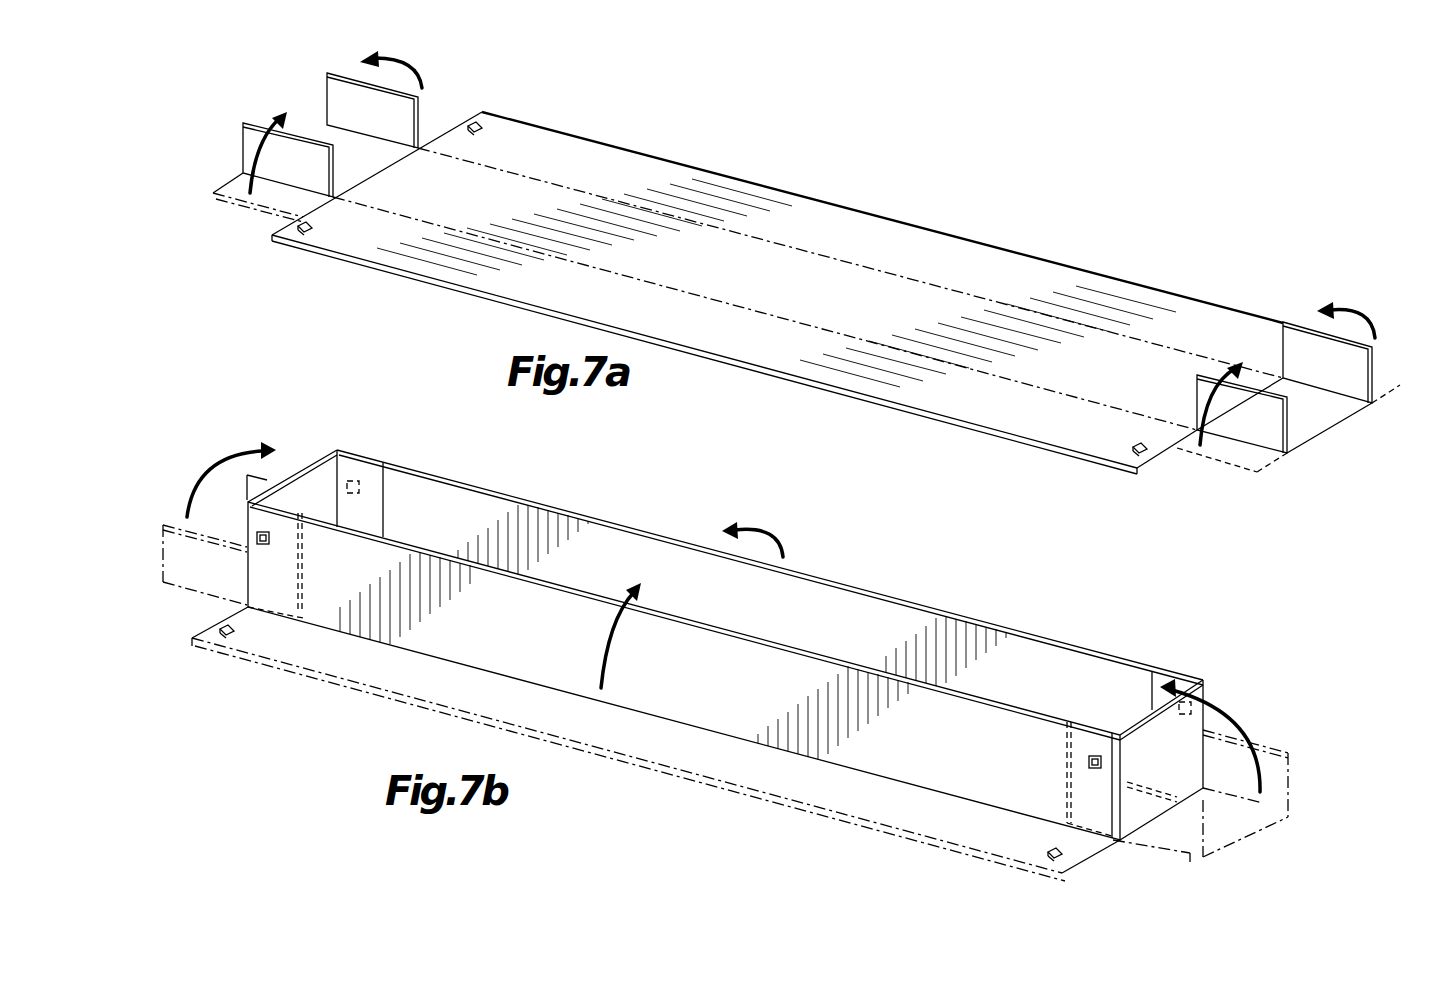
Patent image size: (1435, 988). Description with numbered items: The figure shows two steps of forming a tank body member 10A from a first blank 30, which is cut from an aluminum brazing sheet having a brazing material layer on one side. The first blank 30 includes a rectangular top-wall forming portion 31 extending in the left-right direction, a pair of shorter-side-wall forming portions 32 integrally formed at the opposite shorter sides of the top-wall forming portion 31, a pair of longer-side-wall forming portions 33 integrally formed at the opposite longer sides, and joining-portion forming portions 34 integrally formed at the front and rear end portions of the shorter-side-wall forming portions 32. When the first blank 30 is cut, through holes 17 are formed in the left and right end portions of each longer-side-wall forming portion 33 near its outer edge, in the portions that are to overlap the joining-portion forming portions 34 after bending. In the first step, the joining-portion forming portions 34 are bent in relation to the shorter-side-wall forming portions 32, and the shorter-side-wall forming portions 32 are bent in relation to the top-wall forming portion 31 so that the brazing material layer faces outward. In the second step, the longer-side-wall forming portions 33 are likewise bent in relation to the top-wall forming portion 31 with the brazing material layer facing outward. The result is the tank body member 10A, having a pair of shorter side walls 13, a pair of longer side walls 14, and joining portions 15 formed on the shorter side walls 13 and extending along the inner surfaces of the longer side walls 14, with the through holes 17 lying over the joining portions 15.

In FIG. 7B, the tank body member 10A is at (958, 585).
In FIG. 7B, the shorter side wall 13 is at (313, 470).
In FIG. 7B, the longer side wall 14 is at (722, 707).
In FIG. 7B, the joining portion 15 is at (373, 465).
In FIG. 7A, the through hole 17 is at (477, 125).
In FIG. 7B, the through hole 17 is at (270, 543).
In FIG. 7A, the first blank 30 is at (975, 215).
In FIG. 7A, the top-wall forming portion 31 is at (826, 275).
In FIG. 7A, the shorter-side-wall forming portion 32 is at (325, 135).
In FIG. 7B, the shorter-side-wall forming portion 32 is at (1257, 835).
In FIG. 7A, the longer-side-wall forming portion 33 is at (1100, 285).
In FIG. 7B, the longer-side-wall forming portion 33 is at (622, 747).
In FIG. 7A, the joining-portion forming portion 34 is at (337, 82).
In FIG. 7B, the joining-portion forming portion 34 is at (272, 482).